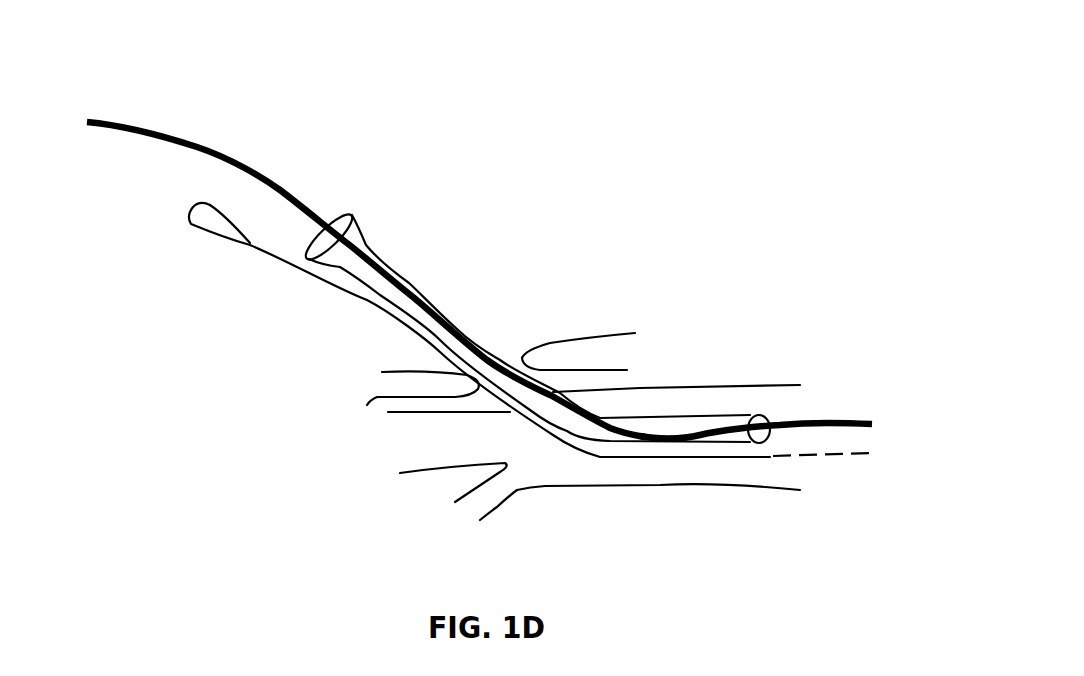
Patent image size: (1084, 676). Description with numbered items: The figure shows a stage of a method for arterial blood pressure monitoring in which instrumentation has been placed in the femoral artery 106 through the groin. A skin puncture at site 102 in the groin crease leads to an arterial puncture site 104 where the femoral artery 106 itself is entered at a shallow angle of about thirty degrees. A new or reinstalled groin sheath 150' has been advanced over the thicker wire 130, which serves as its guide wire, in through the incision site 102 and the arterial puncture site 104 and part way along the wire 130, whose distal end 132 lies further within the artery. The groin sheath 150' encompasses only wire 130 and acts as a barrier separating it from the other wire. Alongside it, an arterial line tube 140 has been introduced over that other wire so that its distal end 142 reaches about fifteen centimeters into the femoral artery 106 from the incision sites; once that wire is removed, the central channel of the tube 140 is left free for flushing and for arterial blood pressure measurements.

The wire 130 is at (343, 273).
The distal end of wire 132 is at (814, 407).
The arterial line tube 140 is at (192, 220).
The groin sheath 150' is at (535, 292).
The puncture site 102 is at (543, 332).
The arterial puncture site 104 is at (559, 382).
The femoral artery 106 is at (703, 387).
The distal end of arterial tube 142 is at (879, 435).